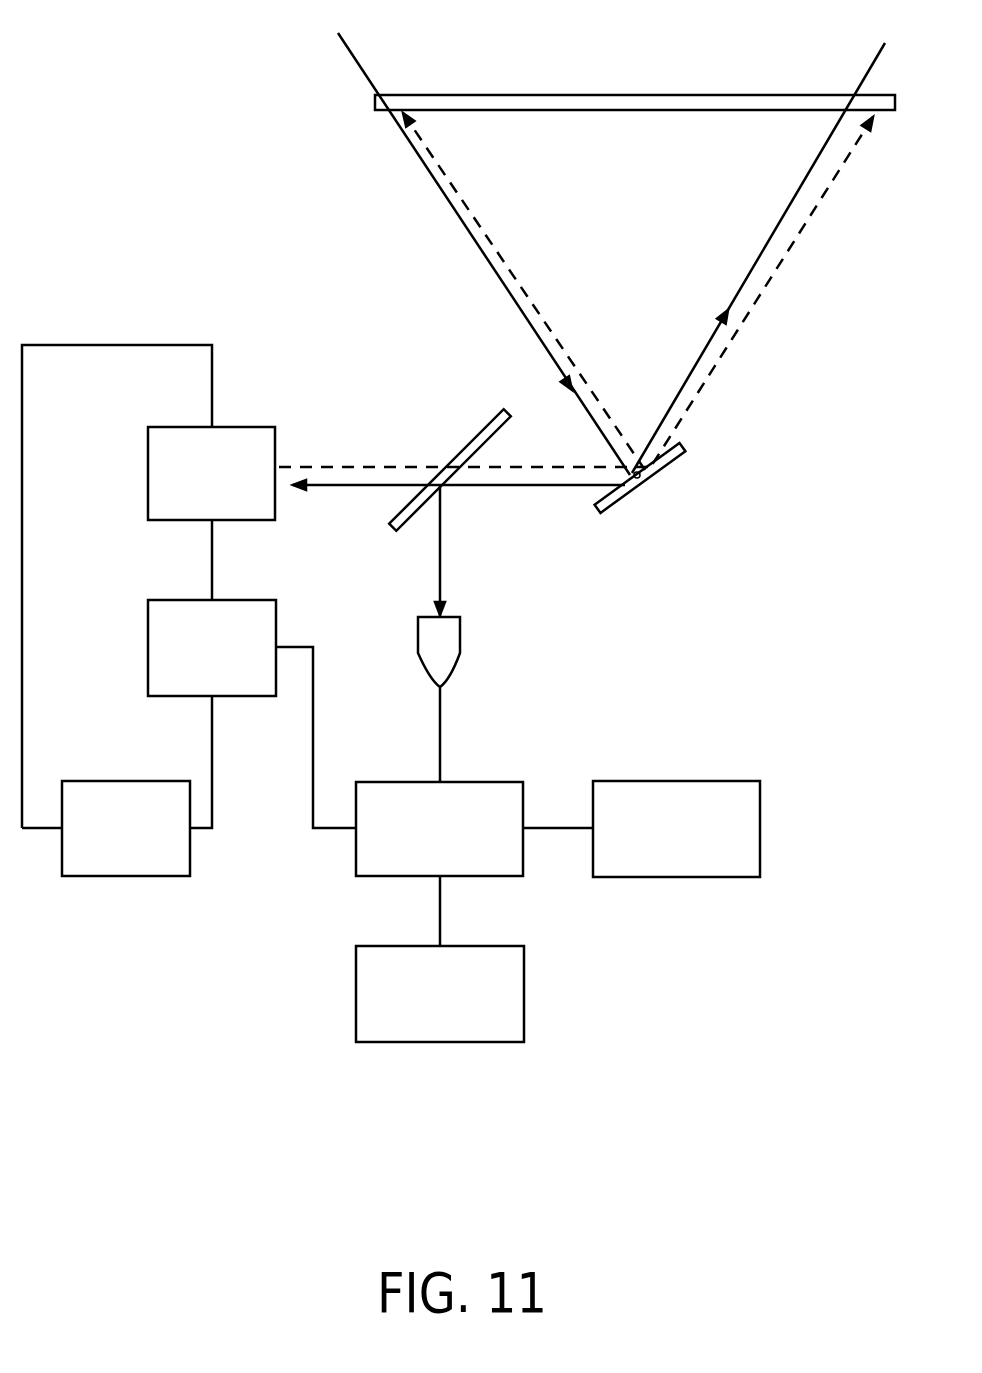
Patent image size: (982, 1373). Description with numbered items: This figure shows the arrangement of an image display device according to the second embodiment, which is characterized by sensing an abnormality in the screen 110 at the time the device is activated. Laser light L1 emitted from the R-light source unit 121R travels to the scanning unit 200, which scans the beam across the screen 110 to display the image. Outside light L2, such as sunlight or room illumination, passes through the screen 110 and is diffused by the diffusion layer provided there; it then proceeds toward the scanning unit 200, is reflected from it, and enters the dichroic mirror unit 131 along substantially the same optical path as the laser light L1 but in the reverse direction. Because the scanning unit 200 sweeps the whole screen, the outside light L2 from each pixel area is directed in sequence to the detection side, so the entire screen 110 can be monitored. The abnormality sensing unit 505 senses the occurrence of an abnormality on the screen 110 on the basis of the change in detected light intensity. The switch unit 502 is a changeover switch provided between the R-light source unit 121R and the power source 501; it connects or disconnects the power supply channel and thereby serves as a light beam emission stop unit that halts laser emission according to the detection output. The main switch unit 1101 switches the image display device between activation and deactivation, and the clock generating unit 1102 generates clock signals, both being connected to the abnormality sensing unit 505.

The screen 110 is at (452, 95).
The outside light L2 is at (358, 62).
The laser light L1 is at (478, 220).
The scanning unit 200 is at (672, 470).
The dichroic mirror unit 131 is at (487, 425).
The R-light source unit 121R is at (268, 427).
The switch unit 502 is at (268, 600).
The power source 501 is at (155, 781).
The abnormality sensing unit 505 is at (512, 782).
The clock generating unit 1102 is at (743, 781).
The main switch unit 1101 is at (508, 946).